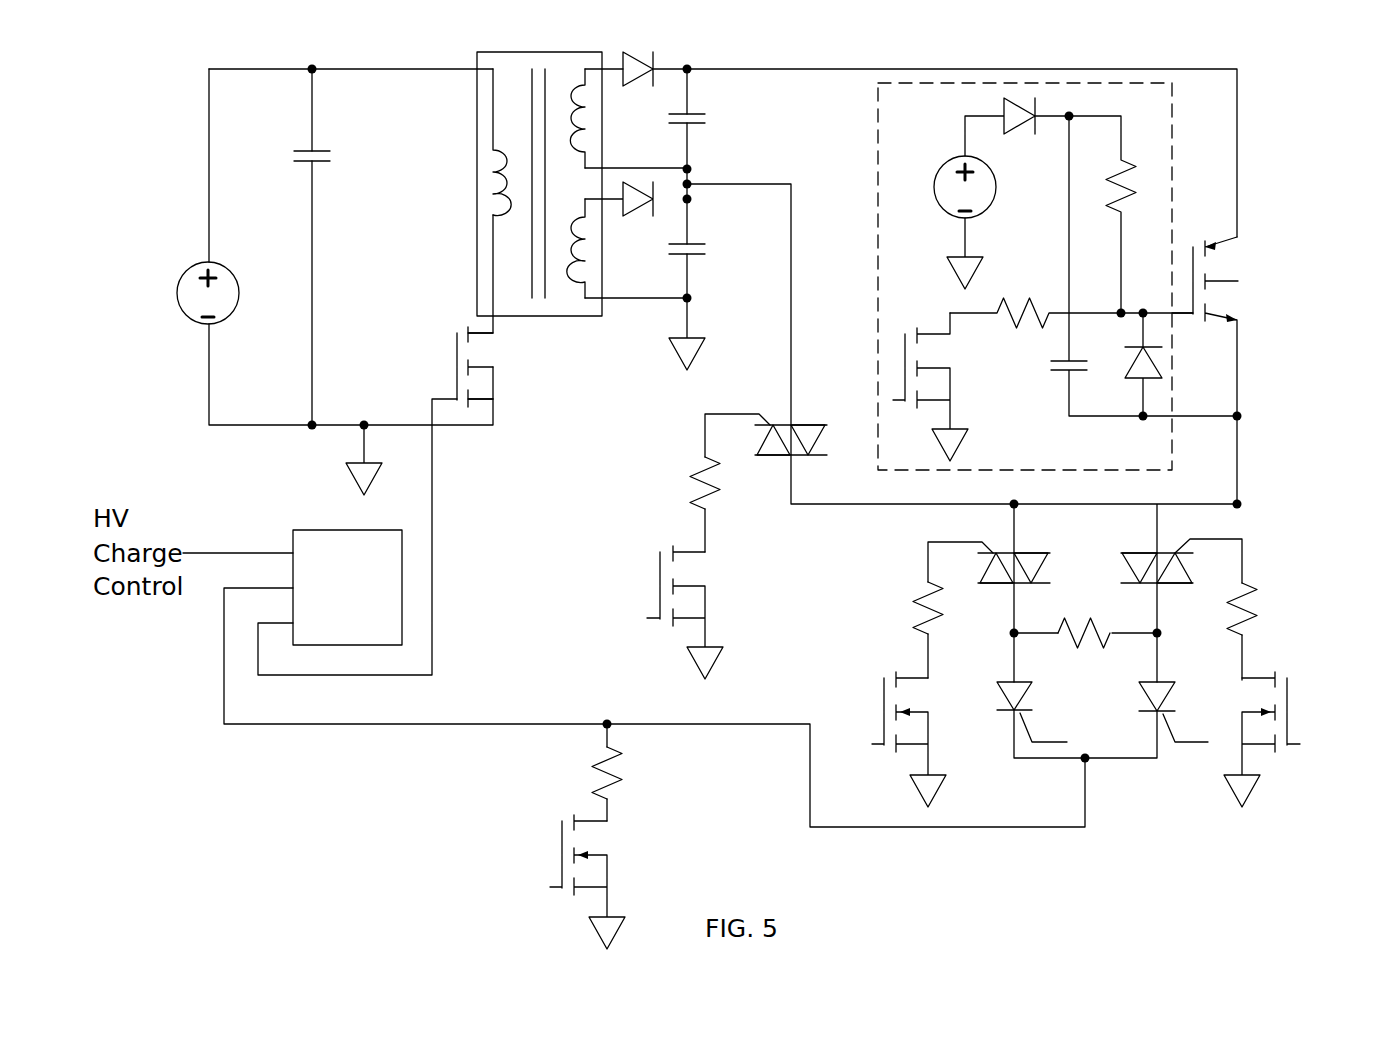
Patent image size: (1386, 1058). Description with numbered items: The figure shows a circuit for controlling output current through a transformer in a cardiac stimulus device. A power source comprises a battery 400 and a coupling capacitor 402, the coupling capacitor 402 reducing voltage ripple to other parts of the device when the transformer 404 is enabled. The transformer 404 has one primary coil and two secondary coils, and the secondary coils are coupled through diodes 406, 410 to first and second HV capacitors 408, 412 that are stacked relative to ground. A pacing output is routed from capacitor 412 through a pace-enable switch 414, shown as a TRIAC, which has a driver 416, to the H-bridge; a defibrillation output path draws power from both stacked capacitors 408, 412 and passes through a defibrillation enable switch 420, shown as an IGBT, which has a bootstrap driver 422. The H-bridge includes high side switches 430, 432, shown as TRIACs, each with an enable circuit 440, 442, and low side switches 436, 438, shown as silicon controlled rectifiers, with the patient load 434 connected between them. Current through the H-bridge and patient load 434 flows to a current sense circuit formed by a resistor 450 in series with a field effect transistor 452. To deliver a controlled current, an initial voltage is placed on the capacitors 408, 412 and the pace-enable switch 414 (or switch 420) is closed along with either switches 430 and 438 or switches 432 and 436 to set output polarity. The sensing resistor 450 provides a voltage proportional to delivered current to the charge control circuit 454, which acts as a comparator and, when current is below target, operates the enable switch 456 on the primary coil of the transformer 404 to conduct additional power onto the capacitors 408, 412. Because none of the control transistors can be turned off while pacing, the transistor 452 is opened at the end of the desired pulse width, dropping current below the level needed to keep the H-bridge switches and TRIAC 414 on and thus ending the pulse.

The battery 400 is at (193, 268).
The coupling capacitor 402 is at (331, 161).
The transformer 404 is at (477, 113).
The diode 406 is at (653, 80).
The first HV capacitor 408 is at (706, 123).
The diode 410 is at (653, 210).
The second HV capacitor 412 is at (706, 254).
The pace-enable switch 414 is at (770, 457).
The driver 416 is at (660, 583).
The defibrillation enable switch 420 is at (1218, 281).
The driver 422 is at (1172, 119).
The high side switch 430 is at (985, 567).
The high side switch 432 is at (1142, 553).
The patient load 434 is at (1068, 625).
The low side switch 436 is at (1030, 686).
The low side switch 438 is at (1147, 697).
The enable circuit 440 is at (884, 712).
The enable circuit 442 is at (1287, 710).
The current sensing resistor 450 is at (592, 760).
The field effect transistor 452 is at (562, 855).
The charge control circuit 454 is at (312, 530).
The enable switch 456 is at (468, 396).